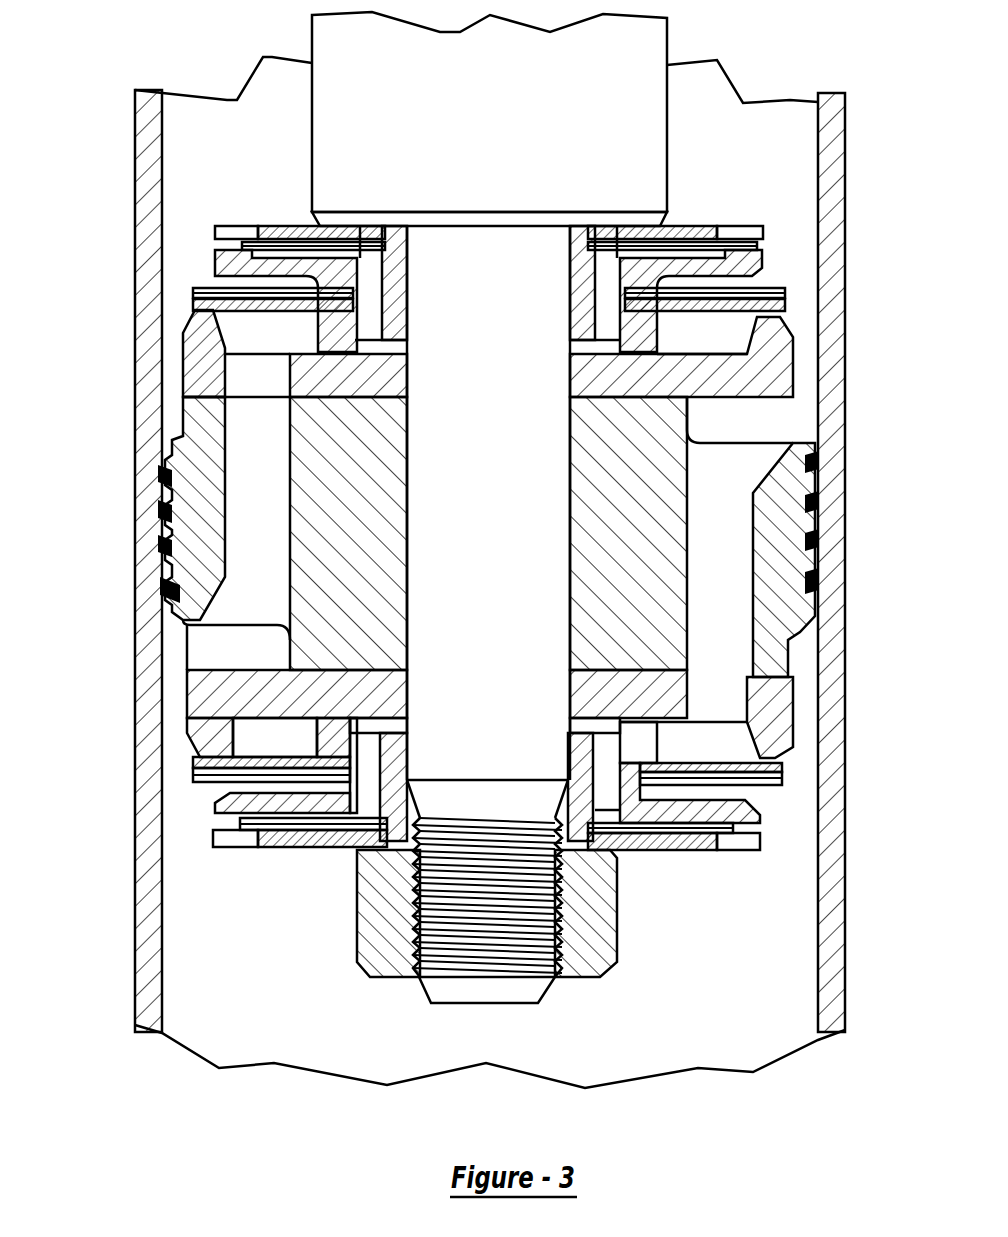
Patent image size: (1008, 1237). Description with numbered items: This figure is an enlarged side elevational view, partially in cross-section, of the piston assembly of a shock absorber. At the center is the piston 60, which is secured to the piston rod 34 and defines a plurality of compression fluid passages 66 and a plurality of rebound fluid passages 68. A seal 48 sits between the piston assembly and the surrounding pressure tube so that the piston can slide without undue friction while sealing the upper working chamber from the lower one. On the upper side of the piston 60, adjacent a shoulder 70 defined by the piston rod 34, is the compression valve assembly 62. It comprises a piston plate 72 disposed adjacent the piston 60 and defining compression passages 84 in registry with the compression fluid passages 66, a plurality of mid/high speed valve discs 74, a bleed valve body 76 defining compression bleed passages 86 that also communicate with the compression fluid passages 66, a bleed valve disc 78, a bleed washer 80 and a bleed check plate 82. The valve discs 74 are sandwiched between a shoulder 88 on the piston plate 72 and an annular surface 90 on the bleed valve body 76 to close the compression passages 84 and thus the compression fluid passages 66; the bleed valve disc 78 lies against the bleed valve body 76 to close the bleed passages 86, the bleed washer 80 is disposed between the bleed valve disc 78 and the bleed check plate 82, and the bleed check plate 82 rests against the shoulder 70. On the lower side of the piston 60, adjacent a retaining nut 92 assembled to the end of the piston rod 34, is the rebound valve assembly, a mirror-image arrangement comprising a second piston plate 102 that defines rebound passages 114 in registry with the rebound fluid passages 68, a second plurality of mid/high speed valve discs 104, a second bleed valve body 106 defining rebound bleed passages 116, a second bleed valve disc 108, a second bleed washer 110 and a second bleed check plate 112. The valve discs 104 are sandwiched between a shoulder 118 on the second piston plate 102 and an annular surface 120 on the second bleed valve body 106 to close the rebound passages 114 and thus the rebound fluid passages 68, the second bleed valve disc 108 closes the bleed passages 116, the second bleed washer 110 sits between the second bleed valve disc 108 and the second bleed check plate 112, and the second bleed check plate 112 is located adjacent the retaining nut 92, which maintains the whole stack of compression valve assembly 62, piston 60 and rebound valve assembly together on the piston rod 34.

The piston rod 34 is at (399, 132).
The seal 48 is at (818, 466).
The piston 60 is at (200, 500).
The compression valve assembly 62 is at (224, 176).
The compression fluid passages 66 is at (265, 577).
The rebound fluid passages 68 is at (760, 496).
The shoulder 70 is at (570, 227).
The piston plate 72 is at (199, 358).
The mid/high speed valve discs 74 is at (192, 231).
The bleed valve body 76 is at (240, 268).
The bleed valve disc 78 is at (752, 247).
The bleed washer 80 is at (618, 240).
The bleed check plate 82 is at (752, 230).
The compression passages 84 is at (268, 392).
The compression bleed passages 86 is at (752, 268).
The shoulder 88 is at (793, 357).
The annular surface 90 is at (620, 312).
The retaining nut 92 is at (592, 929).
The second piston plate 102 is at (778, 705).
The second mid/high speed valve discs 104 is at (801, 756).
The second bleed valve body 106 is at (760, 805).
The second bleed valve disc 108 is at (680, 830).
The second bleed washer 110 is at (325, 852).
The second bleed check plate 112 is at (760, 843).
The rebound passages 114 is at (760, 612).
The rebound bleed passages 116 is at (603, 760).
The shoulder 118 is at (333, 728).
The annular surface 120 is at (340, 775).